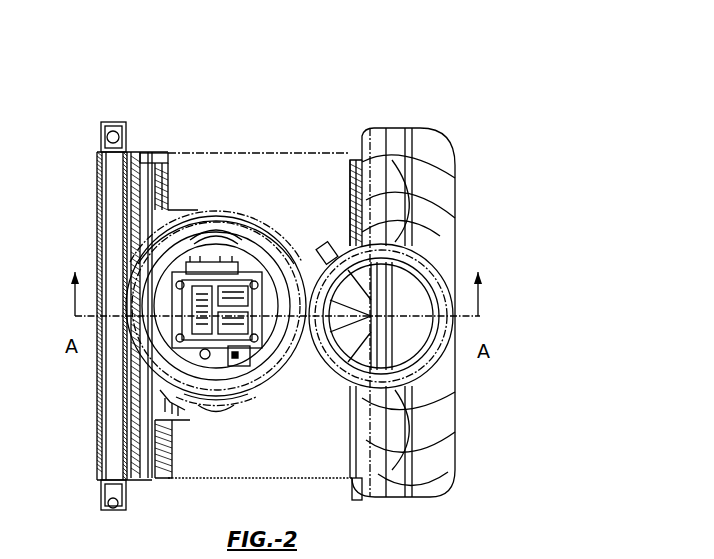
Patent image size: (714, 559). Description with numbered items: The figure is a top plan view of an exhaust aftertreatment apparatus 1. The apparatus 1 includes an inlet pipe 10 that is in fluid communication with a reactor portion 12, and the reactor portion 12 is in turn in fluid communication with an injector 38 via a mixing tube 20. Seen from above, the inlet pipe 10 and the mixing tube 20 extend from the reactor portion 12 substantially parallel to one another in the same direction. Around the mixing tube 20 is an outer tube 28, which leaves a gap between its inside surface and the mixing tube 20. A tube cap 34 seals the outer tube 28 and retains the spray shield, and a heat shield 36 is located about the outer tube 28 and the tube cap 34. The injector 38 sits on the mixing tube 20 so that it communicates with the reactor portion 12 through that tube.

The exhaust aftertreatment apparatus 1 is at (413, 107).
The inlet pipe 10 is at (395, 283).
The reactor portion 12 is at (272, 197).
The mixing tube 20 is at (157, 460).
The outer tube 28 is at (163, 397).
The tube cap 34 is at (143, 297).
The heat shield 36 is at (147, 363).
The injector 38 is at (187, 277).